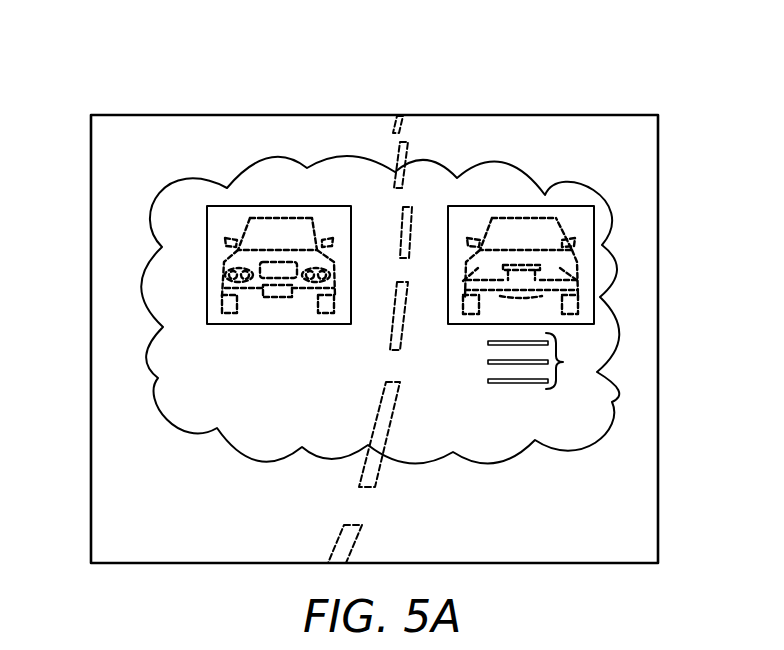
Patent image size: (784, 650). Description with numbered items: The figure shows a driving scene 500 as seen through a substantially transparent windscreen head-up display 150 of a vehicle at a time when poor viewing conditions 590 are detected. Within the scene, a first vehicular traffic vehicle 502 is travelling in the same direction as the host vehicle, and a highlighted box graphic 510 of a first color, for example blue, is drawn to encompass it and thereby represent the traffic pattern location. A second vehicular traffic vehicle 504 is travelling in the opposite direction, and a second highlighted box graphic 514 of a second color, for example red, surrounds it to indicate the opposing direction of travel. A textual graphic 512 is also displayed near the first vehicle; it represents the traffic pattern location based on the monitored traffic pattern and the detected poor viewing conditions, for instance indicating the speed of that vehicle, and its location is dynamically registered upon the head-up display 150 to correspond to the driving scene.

The driving scene 500 is at (140, 83).
The substantially transparent windscreen head-up display 150 is at (523, 115).
The poor viewing conditions 590 is at (613, 402).
The second highlighted box graphic 514 is at (232, 326).
The second vehicular traffic vehicle 504 is at (222, 270).
The highlighted box graphic 510 is at (580, 205).
The first vehicular traffic vehicle 502 is at (578, 300).
The textual graphic 512 is at (563, 362).